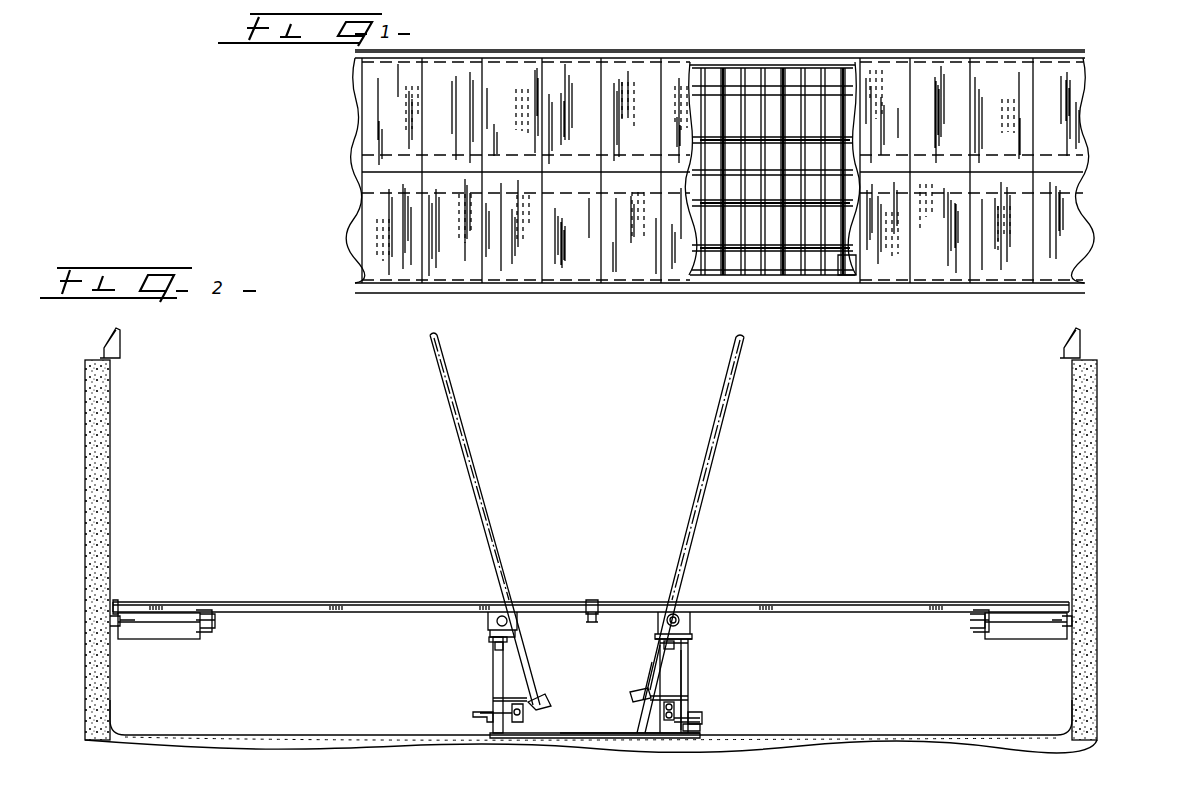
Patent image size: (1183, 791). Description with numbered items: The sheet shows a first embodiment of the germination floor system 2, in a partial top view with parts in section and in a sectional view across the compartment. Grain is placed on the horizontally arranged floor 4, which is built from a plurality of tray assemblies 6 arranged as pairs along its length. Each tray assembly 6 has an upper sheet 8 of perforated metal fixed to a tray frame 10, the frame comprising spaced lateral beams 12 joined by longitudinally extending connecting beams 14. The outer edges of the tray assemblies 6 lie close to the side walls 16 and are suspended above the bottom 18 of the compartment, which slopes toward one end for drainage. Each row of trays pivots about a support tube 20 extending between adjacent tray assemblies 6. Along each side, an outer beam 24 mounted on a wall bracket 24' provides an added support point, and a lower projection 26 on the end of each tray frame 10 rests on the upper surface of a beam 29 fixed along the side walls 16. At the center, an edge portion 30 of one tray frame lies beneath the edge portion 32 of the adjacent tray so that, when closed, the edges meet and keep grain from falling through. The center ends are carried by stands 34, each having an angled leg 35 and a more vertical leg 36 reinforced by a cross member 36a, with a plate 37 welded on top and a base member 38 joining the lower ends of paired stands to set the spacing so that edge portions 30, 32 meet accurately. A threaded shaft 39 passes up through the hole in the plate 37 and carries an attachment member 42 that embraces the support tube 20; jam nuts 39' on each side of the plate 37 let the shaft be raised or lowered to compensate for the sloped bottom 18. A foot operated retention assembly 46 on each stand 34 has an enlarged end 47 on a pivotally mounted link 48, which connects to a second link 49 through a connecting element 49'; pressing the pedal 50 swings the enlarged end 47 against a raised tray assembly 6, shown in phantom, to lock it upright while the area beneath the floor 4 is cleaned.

In FIG. 1, the germination floor system 2 is at (850, 25).
In FIG. 1, the floor 4 is at (609, 105).
In FIG. 2, the floor 4 is at (290, 601).
In FIG. 1, the tray assemblies 6 is at (406, 110).
In FIG. 2, the tray assemblies 6 is at (348, 601).
In FIG. 1, the upper sheet 8 is at (679, 265).
In FIG. 1, the tray frame 10 is at (746, 262).
In FIG. 1, the lateral beams 12 is at (774, 225).
In FIG. 1, the connecting beams 14 is at (745, 95).
In FIG. 2, the side walls 16 is at (1094, 385).
In FIG. 2, the bottom 18 is at (842, 736).
In FIG. 2, the support tube 20 is at (676, 610).
In FIG. 1, the outer beam 24 is at (869, 289).
In FIG. 2, the outer beam 24 is at (592, 638).
In FIG. 2, the wall bracket 24' is at (592, 622).
In FIG. 2, the lower projection 26 is at (122, 601).
In FIG. 2, the beam 29 is at (118, 628).
In FIG. 2, the edge portion 30 is at (592, 615).
In FIG. 2, the edge portion 32 is at (591, 601).
In FIG. 2, the stands 34 is at (490, 680).
In FIG. 2, the leg 35 is at (655, 660).
In FIG. 2, the leg 36 is at (691, 668).
In FIG. 2, the cross member 36a is at (655, 680).
In FIG. 2, the plate 37 is at (692, 641).
In FIG. 2, the base member 38 is at (590, 734).
In FIG. 2, the threaded shaft 39 is at (648, 634).
In FIG. 2, the jam nuts 39' is at (470, 642).
In FIG. 2, the attachment member 42 is at (692, 622).
In FIG. 2, the retention assembly 46 is at (692, 727).
In FIG. 2, the enlarged end 47 is at (632, 694).
In FIG. 2, the link 48 is at (655, 712).
In FIG. 2, the link 49 is at (694, 700).
In FIG. 2, the connecting element 49' is at (724, 710).
In FIG. 2, the pedal 50 is at (700, 715).